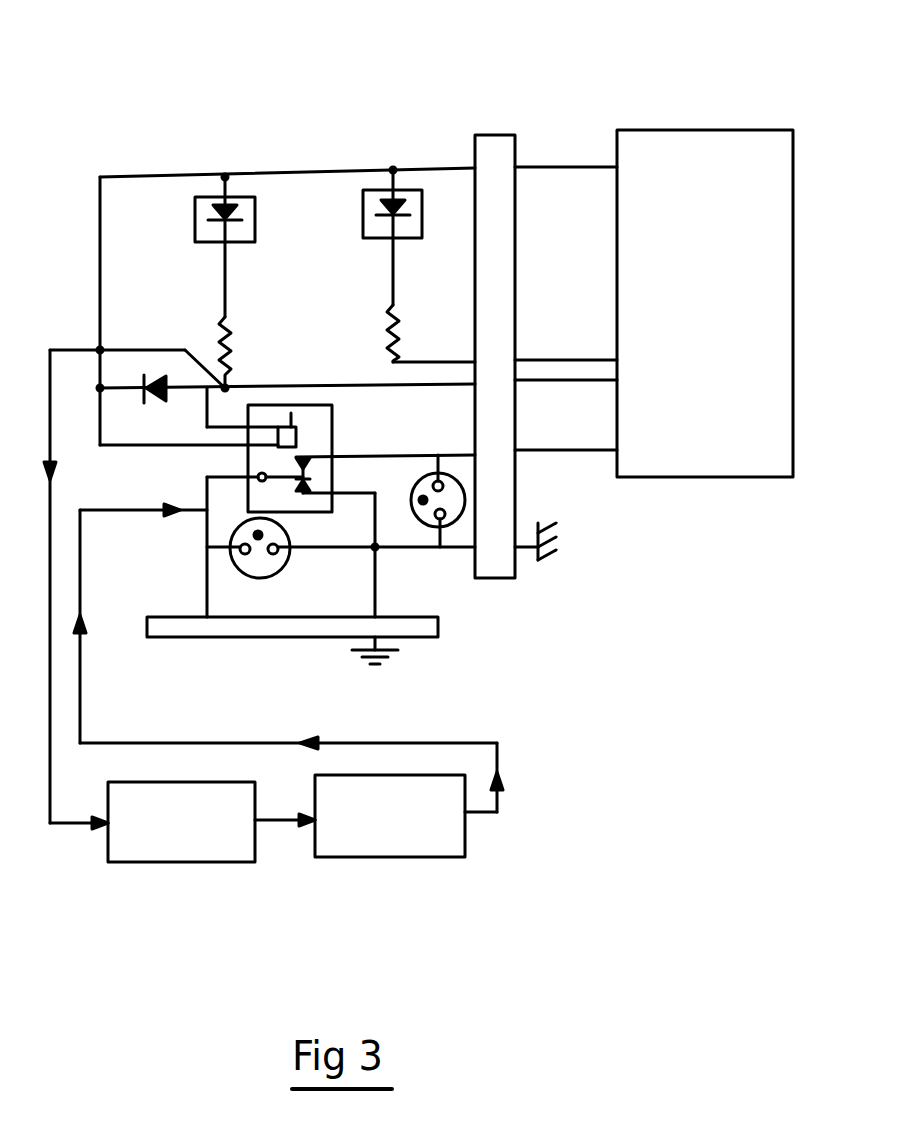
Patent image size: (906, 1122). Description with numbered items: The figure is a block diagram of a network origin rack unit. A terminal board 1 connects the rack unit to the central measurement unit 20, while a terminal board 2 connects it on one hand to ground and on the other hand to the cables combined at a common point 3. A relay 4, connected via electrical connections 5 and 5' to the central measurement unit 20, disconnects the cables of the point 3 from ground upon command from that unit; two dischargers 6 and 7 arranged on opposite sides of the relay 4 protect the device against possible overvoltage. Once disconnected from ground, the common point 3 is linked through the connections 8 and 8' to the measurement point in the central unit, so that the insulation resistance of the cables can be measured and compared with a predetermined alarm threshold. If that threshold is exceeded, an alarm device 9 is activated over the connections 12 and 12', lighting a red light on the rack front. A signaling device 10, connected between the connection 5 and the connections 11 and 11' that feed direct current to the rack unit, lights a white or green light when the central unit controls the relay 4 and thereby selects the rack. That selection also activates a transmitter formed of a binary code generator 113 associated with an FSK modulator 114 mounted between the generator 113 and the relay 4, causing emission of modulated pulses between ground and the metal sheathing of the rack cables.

The terminal board 1 is at (497, 135).
The terminal board 2 is at (165, 638).
The common point of the cables 3 is at (210, 638).
The relay 4 is at (335, 440).
The electrical connection 5 is at (287, 358).
The electrical connection 5' is at (566, 404).
The discharger 6 is at (292, 570).
The discharger 7 is at (418, 527).
The connection 8 is at (385, 427).
The connection 8' is at (566, 479).
The alarm device 9 is at (420, 237).
The signaling device 10 is at (195, 241).
The connection 11 is at (287, 129).
The connection 11' is at (566, 124).
The connection 12 is at (434, 325).
The connection 12' is at (566, 324).
The central measurement unit 20 is at (718, 130).
The binary code generator 113 is at (205, 862).
The FSK modulator 114 is at (428, 857).